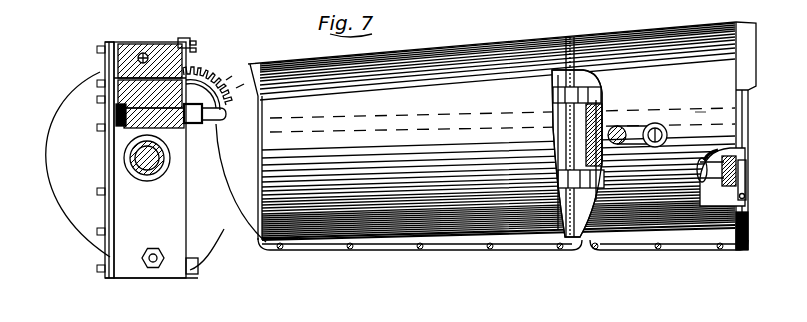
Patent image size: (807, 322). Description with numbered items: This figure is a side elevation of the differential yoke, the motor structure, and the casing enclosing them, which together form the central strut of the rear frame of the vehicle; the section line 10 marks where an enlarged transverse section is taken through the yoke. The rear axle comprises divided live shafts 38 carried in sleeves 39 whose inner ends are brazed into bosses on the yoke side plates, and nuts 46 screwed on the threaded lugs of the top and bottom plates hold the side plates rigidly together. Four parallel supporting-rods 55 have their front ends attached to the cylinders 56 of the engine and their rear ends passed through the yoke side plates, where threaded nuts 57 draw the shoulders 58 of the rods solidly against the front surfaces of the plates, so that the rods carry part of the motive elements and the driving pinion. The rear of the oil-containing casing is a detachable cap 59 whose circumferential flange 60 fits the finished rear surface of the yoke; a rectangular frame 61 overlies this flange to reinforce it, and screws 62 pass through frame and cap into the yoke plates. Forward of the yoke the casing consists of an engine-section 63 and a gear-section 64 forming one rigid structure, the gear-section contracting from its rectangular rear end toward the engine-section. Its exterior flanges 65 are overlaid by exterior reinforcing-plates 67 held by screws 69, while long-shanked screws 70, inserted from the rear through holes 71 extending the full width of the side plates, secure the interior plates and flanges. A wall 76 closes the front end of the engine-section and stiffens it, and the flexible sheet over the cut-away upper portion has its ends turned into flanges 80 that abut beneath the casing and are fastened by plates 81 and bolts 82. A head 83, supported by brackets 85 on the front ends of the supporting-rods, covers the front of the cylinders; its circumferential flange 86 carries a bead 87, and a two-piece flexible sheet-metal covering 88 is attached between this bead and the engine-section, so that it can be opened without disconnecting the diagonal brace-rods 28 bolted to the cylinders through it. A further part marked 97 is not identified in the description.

The section line 10 is at (151, 155).
The diagonal brace-rods 28 is at (620, 126).
The divided live shafts 38 is at (152, 168).
The sleeves 39 is at (140, 176).
The nuts 46 is at (150, 266).
The supporting-rods 55 is at (545, 112).
The cylinders 56 is at (745, 160).
The threaded nuts 57 is at (117, 116).
The shoulders 58 is at (240, 86).
The detachable cap 59 is at (52, 172).
The circumferential flange 60 is at (112, 46).
The frame 61 is at (110, 272).
The screws 62 is at (105, 262).
The engine-section 63 is at (476, 132).
The gear-section 64 is at (221, 226).
The exterior flanges 65 is at (184, 38).
The exterior reinforcing-plates 67 is at (200, 68).
The screws 69 is at (196, 43).
The long-shanked screws 70 is at (105, 80).
The holes 71 is at (120, 74).
The wall 76 is at (572, 38).
The flanges 80 is at (438, 250).
The plates 81 is at (514, 248).
The bolts 82 is at (490, 250).
The head 83 is at (748, 116).
The brackets 85 is at (745, 195).
The circumferential flange 86 is at (742, 248).
The bead 87 is at (748, 22).
The flexible sheet-metal covering 88 is at (693, 125).
The pinion shaft 97 is at (232, 78).